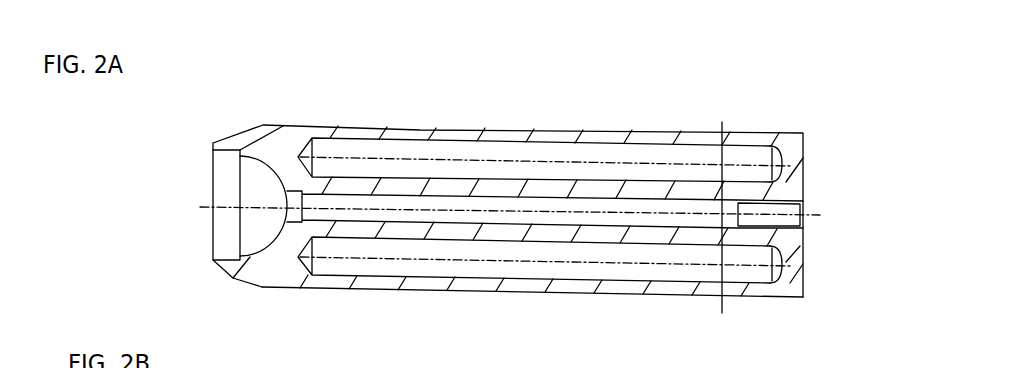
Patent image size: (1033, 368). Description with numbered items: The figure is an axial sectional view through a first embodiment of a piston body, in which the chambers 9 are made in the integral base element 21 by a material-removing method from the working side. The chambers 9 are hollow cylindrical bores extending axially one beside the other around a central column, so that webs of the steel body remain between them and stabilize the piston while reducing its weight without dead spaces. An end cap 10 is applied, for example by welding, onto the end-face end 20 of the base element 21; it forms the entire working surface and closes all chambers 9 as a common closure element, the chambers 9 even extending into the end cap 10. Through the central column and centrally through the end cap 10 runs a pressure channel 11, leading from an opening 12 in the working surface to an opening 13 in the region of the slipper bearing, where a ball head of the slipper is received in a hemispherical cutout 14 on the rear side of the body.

The chambers 9 is at (385, 253).
The end cap 10 is at (763, 193).
The pressure channel 11 is at (472, 210).
The opening 12 is at (806, 217).
The opening 13 is at (242, 192).
The hemispherical cutout 14 is at (242, 230).
The end-face end 20 is at (722, 313).
The base element 21 is at (560, 290).